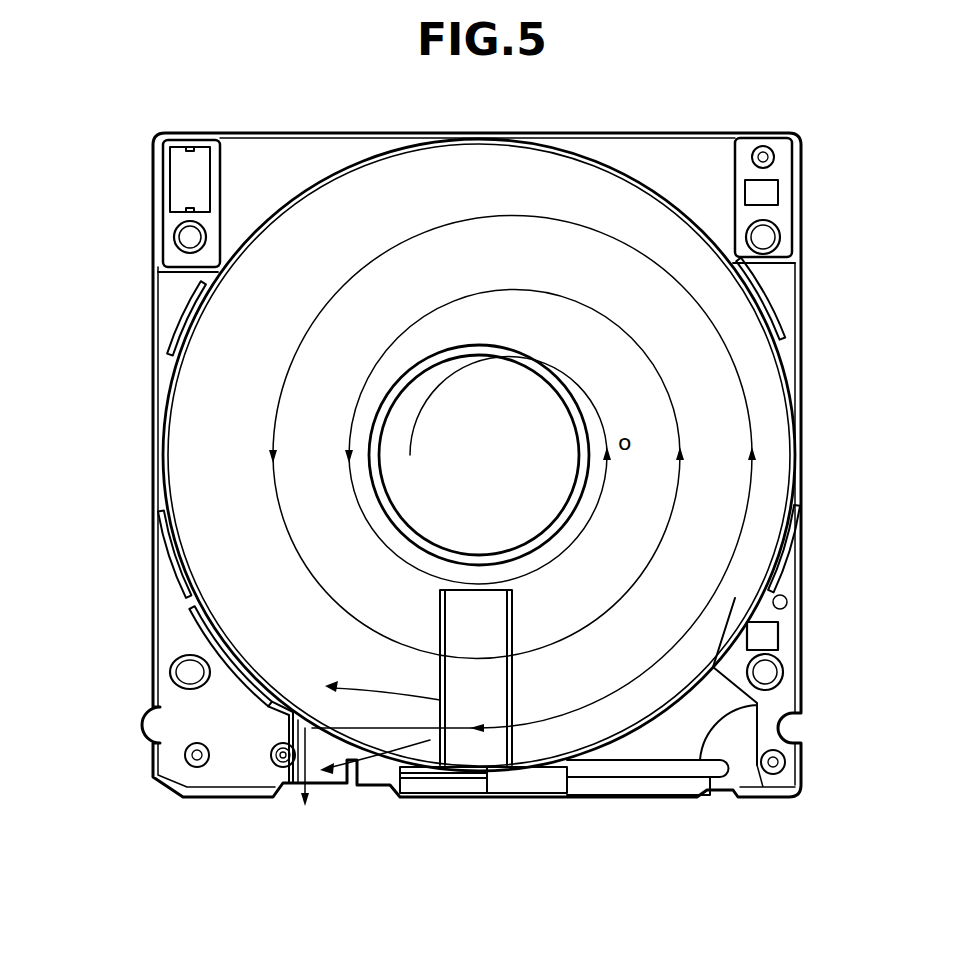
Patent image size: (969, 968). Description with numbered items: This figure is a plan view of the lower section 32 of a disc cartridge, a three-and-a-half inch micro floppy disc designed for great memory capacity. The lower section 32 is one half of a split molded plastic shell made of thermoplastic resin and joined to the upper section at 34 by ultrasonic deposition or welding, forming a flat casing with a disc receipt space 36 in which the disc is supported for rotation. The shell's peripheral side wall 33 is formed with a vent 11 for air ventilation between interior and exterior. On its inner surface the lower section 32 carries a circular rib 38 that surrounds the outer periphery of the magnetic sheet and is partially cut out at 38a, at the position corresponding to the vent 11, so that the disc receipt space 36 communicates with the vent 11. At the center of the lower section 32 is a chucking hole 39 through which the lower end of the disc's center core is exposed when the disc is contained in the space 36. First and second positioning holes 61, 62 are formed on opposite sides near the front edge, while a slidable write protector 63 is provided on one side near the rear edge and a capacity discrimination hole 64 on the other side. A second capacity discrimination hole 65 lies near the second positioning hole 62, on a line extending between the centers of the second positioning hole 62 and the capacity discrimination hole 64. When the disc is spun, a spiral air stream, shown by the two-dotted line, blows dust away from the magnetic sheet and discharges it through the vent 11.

The vent 11 is at (335, 785).
The lower section 32 is at (146, 189).
The peripheral side wall 33 is at (153, 322).
The joint 34 is at (768, 302).
The disc receipt space 36 is at (190, 420).
The circular rib 38 is at (170, 555).
The air outlet 38a is at (307, 716).
The chucking hole 39 is at (545, 418).
The first positioning hole 61 is at (188, 673).
The second positioning hole 62 is at (768, 673).
The slidable write protector 63 is at (178, 233).
The capacity discrimination hole 64 is at (776, 192).
The second capacity discrimination hole 65 is at (766, 636).